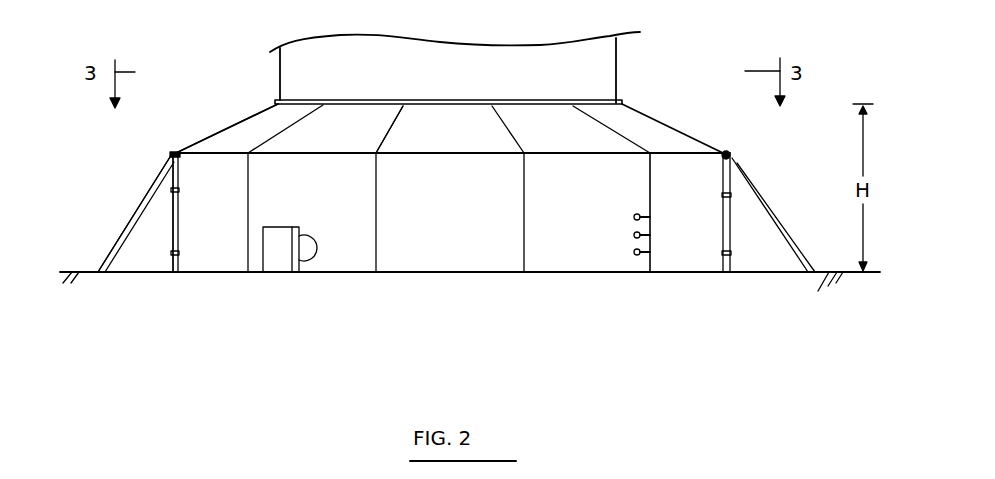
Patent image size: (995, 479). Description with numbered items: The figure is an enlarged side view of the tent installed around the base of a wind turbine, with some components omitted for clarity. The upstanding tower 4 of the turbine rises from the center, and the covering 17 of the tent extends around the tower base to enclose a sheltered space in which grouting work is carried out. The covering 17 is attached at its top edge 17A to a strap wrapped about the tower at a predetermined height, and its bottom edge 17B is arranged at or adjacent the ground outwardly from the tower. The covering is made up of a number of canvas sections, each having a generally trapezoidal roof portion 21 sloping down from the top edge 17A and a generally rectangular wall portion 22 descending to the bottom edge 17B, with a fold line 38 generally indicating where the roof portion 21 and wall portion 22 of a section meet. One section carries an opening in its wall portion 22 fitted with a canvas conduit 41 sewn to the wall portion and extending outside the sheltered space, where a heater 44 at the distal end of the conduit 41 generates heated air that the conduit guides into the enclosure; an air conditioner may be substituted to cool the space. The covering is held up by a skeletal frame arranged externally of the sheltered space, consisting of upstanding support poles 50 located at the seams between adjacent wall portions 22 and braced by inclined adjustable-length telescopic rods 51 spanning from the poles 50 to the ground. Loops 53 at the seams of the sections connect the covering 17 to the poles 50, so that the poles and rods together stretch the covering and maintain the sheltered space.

The tower 4 is at (618, 70).
The covering 17 is at (665, 129).
The top edge 17A is at (630, 104).
The bottom edge 17B is at (578, 274).
The roof portion 21 is at (258, 129).
The wall portion 22 is at (443, 255).
The fold line 38 is at (403, 155).
The conduit 41 is at (305, 259).
The heater 44 is at (260, 256).
The support poles 50 is at (168, 237).
The rods 51 is at (137, 211).
The loops 53 is at (170, 254).